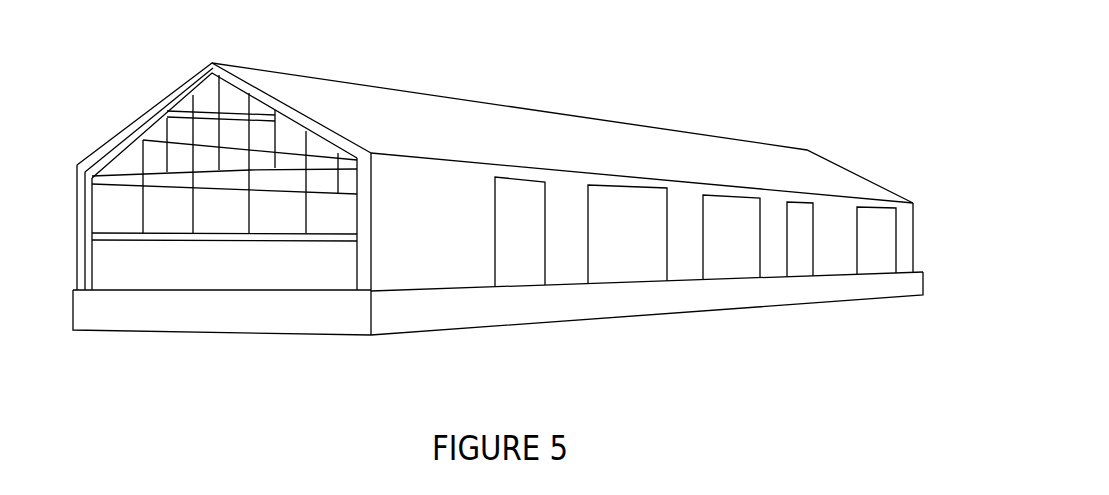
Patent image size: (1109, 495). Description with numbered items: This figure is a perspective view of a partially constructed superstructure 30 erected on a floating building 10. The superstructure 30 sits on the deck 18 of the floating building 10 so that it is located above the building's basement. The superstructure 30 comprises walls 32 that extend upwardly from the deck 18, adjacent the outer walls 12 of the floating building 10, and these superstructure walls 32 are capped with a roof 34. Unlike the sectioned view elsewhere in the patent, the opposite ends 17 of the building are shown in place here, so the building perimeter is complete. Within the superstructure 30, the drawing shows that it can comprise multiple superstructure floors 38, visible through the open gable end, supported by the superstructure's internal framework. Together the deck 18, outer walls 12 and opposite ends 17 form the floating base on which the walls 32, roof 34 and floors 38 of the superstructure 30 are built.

The floating building 10 is at (503, 225).
The outer walls 12 is at (517, 277).
The opposite ends 17 is at (925, 277).
The deck 18 is at (275, 292).
The superstructure 30 is at (484, 167).
The walls 32 is at (558, 205).
The roof 34 is at (487, 133).
The superstructure floors 38 is at (135, 238).